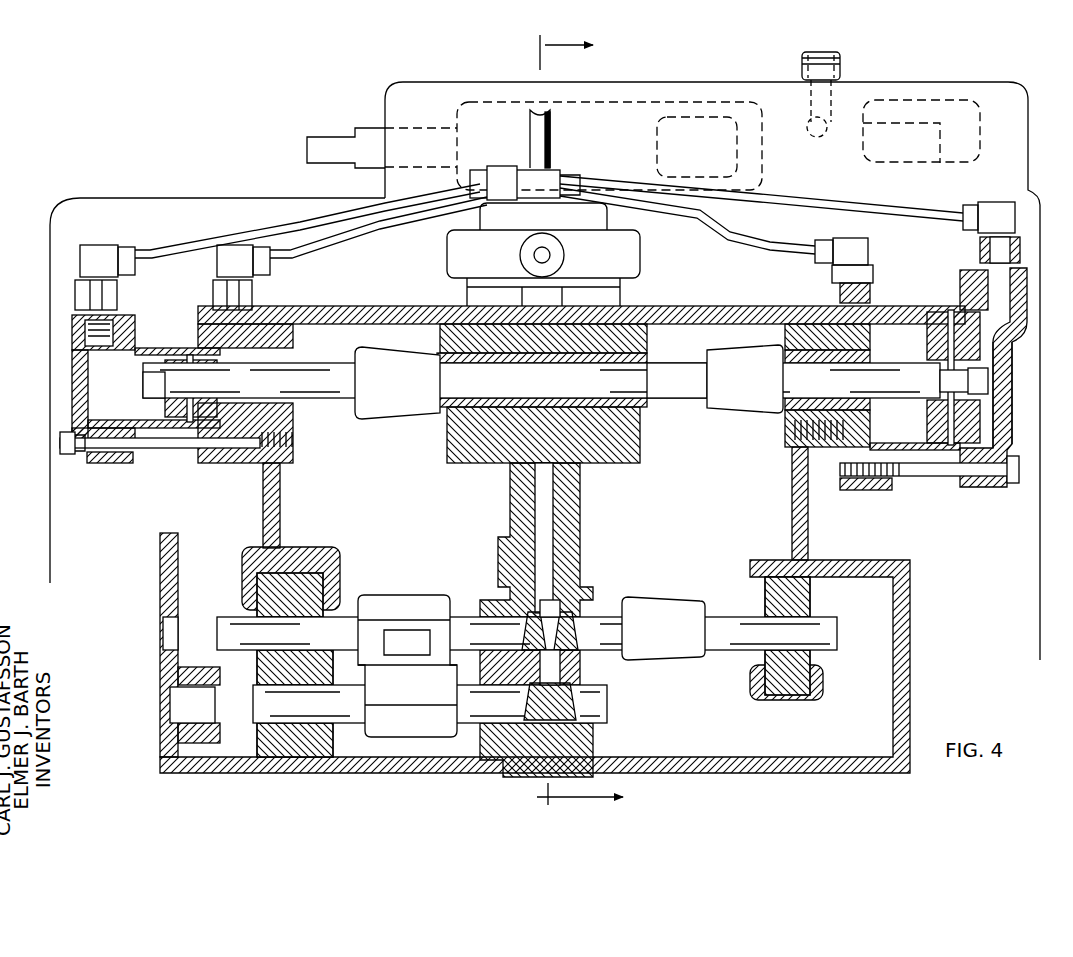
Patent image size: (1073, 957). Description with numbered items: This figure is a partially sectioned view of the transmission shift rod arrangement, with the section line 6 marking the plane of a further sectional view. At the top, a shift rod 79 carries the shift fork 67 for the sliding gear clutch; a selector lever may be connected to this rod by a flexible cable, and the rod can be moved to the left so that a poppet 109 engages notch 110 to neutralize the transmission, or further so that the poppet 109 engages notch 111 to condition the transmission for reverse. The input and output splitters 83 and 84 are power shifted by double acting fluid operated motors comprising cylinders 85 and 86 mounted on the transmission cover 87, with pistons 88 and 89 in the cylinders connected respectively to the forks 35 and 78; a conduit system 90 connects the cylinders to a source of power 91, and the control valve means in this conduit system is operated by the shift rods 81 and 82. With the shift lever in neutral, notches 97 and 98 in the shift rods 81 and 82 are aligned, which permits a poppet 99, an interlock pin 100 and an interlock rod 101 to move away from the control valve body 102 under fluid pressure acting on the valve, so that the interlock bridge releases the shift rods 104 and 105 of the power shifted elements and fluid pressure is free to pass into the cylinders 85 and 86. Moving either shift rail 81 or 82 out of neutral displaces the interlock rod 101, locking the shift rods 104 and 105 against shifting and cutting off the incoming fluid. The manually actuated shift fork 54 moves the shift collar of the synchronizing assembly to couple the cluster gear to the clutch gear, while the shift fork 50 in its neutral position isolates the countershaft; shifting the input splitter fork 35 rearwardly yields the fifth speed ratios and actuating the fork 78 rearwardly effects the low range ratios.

The section line 6- 6 is at (590, 422).
The shift fork 35 is at (407, 404).
The shift fork 50 is at (678, 622).
The manually actuated shift fork 54 is at (407, 603).
The shift fork 67 is at (700, 112).
The shift fork 78 is at (742, 394).
The shift rod 79 is at (343, 150).
The shift rod 81 is at (252, 718).
The shift rod 82 is at (237, 630).
The input splitter 83 is at (160, 461).
The output splitter 84 is at (930, 494).
The cylinder 85 is at (77, 397).
The cylinder 86 is at (1008, 395).
The transmission cover 87 is at (266, 500).
The piston 88 is at (166, 403).
The piston 89 is at (928, 411).
The conduit system 90 is at (243, 223).
The source of power 91 is at (537, 136).
The notch 97 is at (571, 610).
The notch 98 is at (576, 698).
The poppet 99 is at (550, 667).
The interlock pin 100 is at (576, 626).
The interlock rod 101 is at (549, 512).
The control valve body 102 is at (462, 250).
The shift rod 104 is at (333, 391).
The shift rod 105 is at (673, 390).
The poppet 109 is at (813, 134).
The notch 110 is at (843, 128).
The notch 111 is at (916, 128).